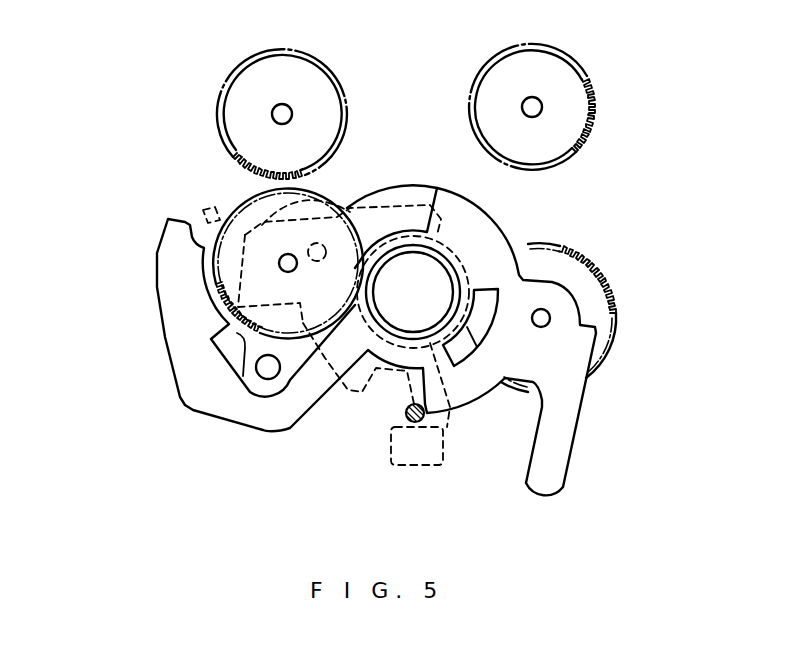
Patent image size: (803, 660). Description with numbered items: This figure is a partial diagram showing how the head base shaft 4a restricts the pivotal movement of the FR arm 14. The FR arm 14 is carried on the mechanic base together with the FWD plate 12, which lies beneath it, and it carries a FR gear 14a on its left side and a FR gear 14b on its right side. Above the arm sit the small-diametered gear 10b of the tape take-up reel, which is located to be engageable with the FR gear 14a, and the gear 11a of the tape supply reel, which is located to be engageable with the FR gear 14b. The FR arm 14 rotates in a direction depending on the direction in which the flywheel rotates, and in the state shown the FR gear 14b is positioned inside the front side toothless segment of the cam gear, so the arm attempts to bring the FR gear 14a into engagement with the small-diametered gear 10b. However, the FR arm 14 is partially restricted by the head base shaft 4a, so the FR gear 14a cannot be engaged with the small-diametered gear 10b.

The small-diametered gear 10b is at (240, 90).
The gear 11a is at (563, 78).
The FR arm 14 is at (568, 428).
The FR gear 14a is at (247, 212).
The FR gear 14b is at (607, 318).
The head base shaft 4a is at (410, 415).
The FWD plate 12 is at (410, 467).